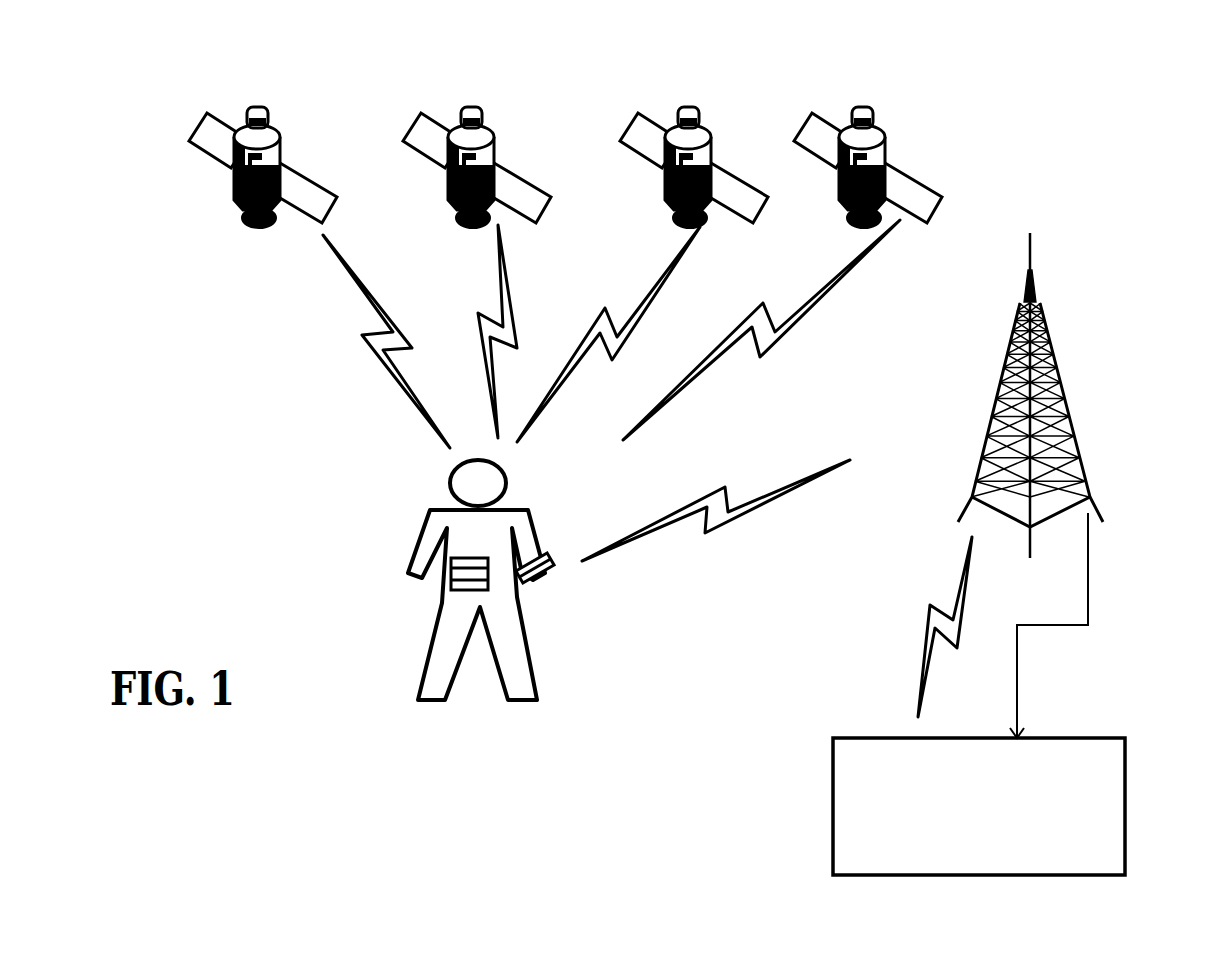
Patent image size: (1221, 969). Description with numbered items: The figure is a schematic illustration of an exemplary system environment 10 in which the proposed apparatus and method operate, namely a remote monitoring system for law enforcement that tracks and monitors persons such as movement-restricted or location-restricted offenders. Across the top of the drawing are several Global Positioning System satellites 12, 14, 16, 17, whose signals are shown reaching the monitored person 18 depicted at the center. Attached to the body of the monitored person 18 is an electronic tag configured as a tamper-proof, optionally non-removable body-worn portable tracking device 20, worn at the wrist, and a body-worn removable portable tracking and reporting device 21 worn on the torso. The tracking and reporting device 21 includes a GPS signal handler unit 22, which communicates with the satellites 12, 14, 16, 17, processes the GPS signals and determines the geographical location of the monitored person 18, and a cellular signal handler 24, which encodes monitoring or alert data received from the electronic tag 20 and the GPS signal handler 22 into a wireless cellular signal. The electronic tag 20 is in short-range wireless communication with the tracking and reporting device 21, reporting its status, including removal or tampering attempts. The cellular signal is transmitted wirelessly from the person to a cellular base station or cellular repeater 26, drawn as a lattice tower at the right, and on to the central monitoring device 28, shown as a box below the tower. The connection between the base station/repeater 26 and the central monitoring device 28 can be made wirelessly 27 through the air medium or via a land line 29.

The system environment 10 is at (1150, 100).
The GPS satellite 12 is at (294, 108).
The GPS satellite 14 is at (497, 108).
The GPS satellite 16 is at (699, 106).
The GPS satellite 17 is at (873, 105).
The monitored person 18 is at (512, 481).
The electronic tag 20 is at (542, 553).
The tracking and reporting device 21 is at (490, 545).
The GPS signal handler unit 22 is at (443, 557).
The cellular signal handler 24 is at (457, 588).
The cellular base station or cellular repeater 26 is at (1073, 380).
The wireless connection 27 is at (917, 663).
The central monitoring device 28 is at (1125, 813).
The land line 29 is at (1103, 615).